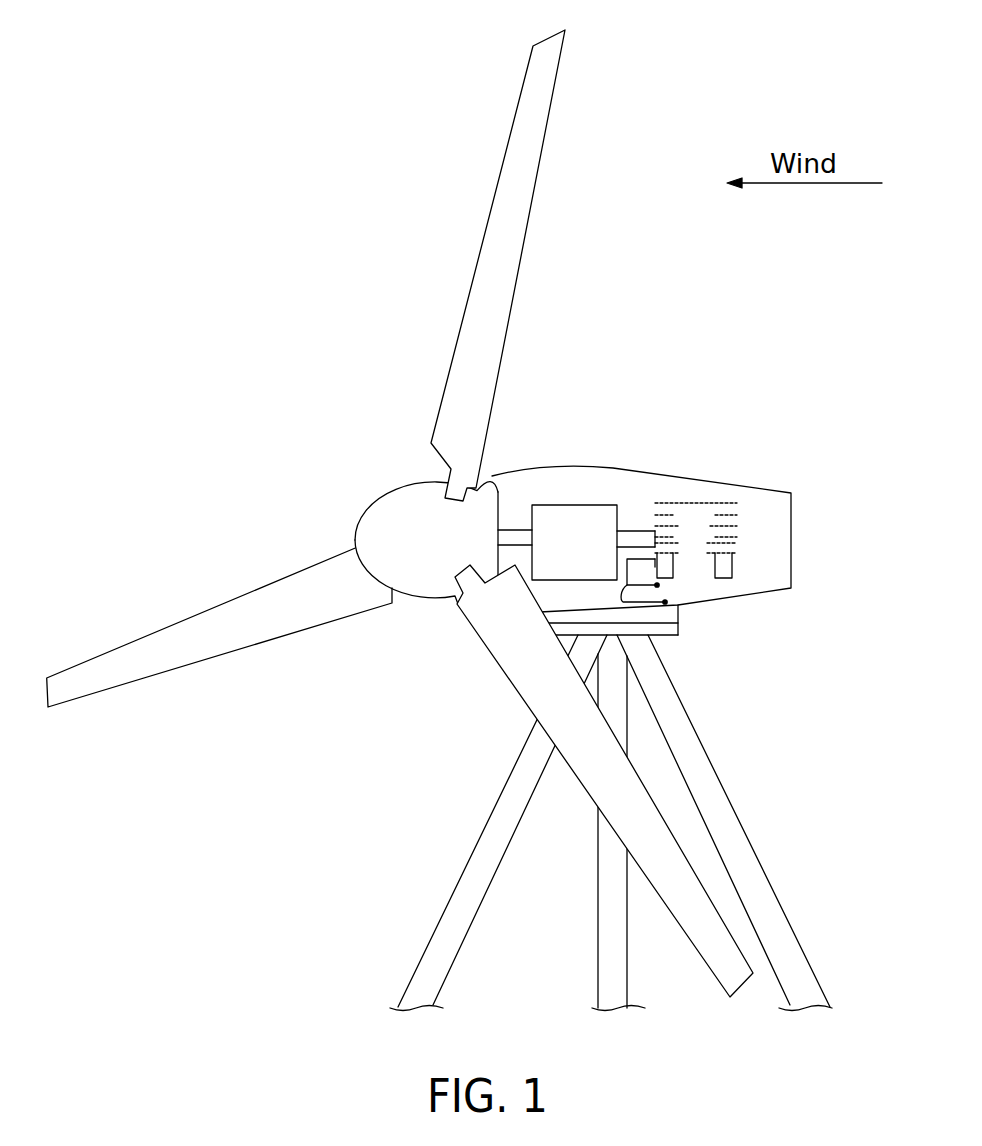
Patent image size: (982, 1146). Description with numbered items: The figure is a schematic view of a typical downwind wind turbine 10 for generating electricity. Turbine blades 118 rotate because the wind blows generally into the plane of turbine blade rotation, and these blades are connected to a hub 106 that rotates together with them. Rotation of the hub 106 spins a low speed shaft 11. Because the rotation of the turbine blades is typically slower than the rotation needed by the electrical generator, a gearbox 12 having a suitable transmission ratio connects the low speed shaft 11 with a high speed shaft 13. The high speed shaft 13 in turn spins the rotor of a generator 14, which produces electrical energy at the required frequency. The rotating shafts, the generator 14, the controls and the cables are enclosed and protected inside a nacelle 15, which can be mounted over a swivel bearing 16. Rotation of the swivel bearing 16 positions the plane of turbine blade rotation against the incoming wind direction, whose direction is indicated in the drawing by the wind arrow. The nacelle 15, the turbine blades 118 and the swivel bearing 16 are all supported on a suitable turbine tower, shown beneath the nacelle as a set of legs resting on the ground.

The wind turbine 10 is at (461, 509).
The low speed shaft 11 is at (510, 527).
The gearbox 12 is at (577, 505).
The high speed shaft 13 is at (633, 531).
The generator 14 is at (728, 538).
The nacelle 15 is at (791, 567).
The swivel bearing 16 is at (678, 630).
The hub 106 is at (423, 597).
The turbine blades 118 is at (337, 552).